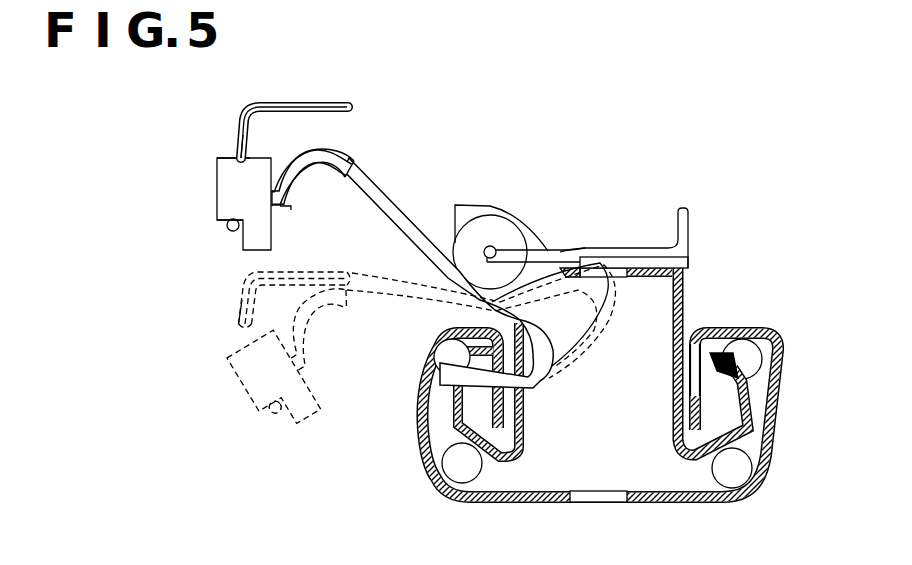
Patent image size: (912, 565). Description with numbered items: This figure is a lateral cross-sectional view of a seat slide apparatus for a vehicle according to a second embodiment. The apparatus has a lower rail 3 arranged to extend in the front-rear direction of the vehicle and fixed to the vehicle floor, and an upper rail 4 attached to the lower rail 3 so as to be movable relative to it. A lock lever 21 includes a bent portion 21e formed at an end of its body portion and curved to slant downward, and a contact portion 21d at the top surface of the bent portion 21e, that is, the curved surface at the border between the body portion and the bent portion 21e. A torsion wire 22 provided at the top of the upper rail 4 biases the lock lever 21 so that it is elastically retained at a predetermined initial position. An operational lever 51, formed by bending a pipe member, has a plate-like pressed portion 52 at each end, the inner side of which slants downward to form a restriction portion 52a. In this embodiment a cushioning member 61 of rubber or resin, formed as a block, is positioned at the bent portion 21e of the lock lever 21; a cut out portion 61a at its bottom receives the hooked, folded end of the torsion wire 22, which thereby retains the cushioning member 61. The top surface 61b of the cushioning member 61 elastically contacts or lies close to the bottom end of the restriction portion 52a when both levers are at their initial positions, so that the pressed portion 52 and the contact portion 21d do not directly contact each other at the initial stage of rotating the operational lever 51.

The lower rail 3 is at (773, 452).
The upper rail 4 is at (685, 290).
The lock lever 21 is at (443, 259).
The contact portion 21d is at (336, 145).
The bent portion 21e is at (296, 208).
The torsion wire 22 is at (232, 238).
The operational lever 51 is at (307, 229).
The pressed portion 52 is at (273, 229).
The restriction portion 52a is at (239, 137).
The cushioning member 61 is at (224, 318).
The cut out portion 61a is at (185, 223).
The top surface 61b is at (216, 158).